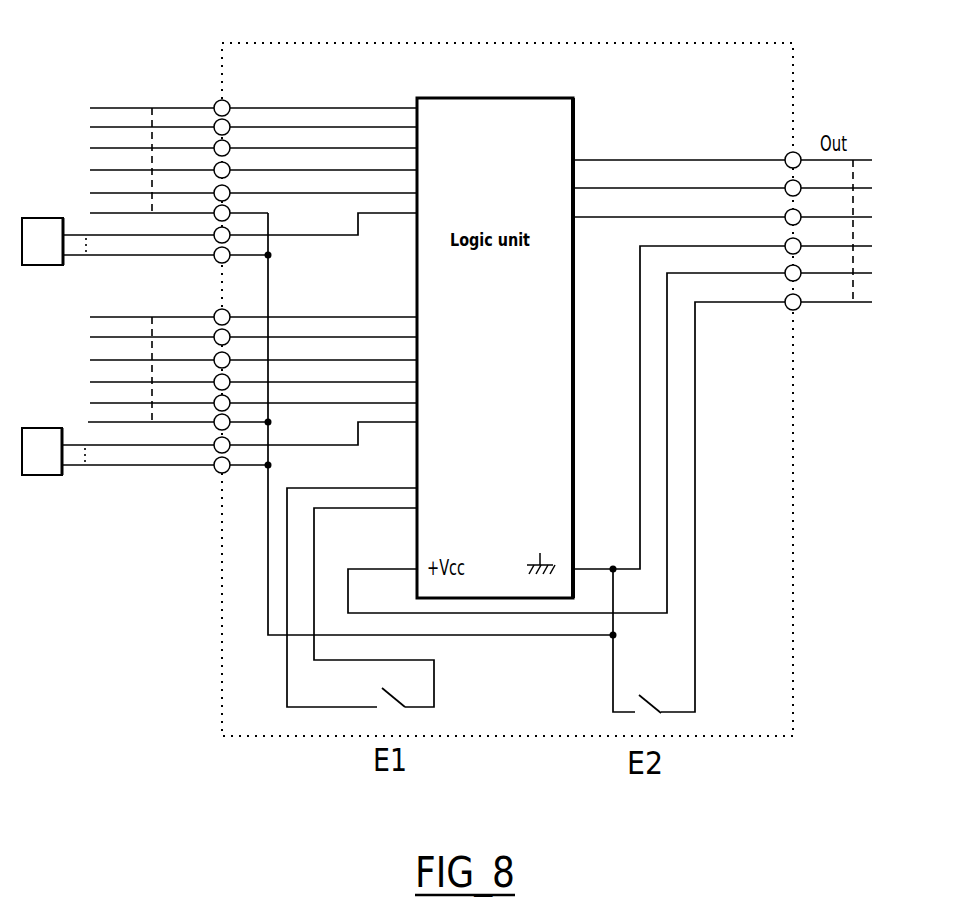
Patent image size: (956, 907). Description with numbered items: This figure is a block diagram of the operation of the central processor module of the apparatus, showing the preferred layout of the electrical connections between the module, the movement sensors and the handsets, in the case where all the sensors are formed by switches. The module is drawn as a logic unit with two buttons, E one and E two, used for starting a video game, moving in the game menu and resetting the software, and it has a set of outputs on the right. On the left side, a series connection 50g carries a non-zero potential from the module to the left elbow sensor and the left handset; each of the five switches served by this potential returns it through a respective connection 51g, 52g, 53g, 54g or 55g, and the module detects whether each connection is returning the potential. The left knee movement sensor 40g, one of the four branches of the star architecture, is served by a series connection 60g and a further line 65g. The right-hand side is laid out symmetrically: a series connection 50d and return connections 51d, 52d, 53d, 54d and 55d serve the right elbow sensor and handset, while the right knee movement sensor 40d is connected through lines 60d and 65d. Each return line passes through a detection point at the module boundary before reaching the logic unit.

The connection 51g is at (90, 108).
The connection 52g is at (90, 127).
The connection 53g is at (90, 148).
The connection 54g is at (90, 170).
The connection 55g is at (90, 193).
The series connection 50g is at (90, 213).
The movement sensor 40g is at (38, 252).
The series connection 60g is at (100, 257).
The left-hand switch signal line 65g is at (175, 237).
The right-hand first sensor input line 51d is at (90, 317).
The right-hand second sensor input line 52d is at (90, 337).
The right-hand third sensor input line 53d is at (98, 360).
The right-hand fourth sensor input line 54d is at (90, 382).
The right-hand fifth sensor input line 55d is at (90, 403).
The right-hand sensor output line 50d is at (100, 420).
The movement sensor 40d is at (35, 468).
The right-hand switch ground line 60d is at (117, 468).
The right-hand switch signal line 65d is at (175, 447).